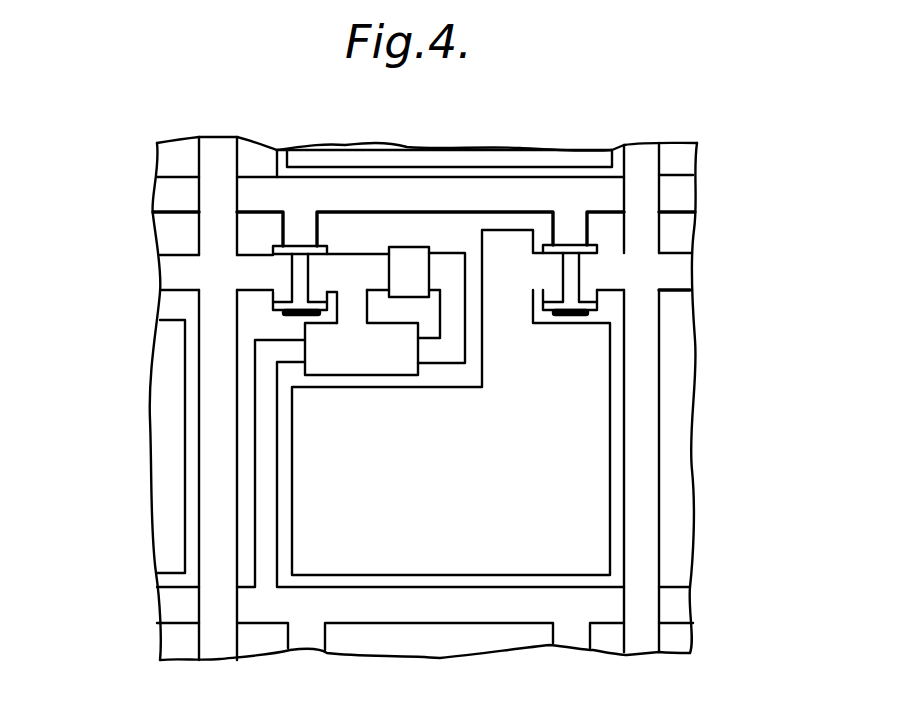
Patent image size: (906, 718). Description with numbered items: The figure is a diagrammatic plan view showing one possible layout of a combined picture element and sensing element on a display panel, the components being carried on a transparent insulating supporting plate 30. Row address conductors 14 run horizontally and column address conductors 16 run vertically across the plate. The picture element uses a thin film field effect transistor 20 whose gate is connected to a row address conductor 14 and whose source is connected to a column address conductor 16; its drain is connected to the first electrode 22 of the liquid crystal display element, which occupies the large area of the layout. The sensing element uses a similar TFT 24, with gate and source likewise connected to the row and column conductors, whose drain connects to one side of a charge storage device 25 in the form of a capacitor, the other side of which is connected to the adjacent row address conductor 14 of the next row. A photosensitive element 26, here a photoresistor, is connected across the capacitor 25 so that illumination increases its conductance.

The row address conductor 14 is at (180, 203).
The column address conductor 16 is at (208, 153).
The thin film field effect transistor 20 is at (602, 302).
The first electrode 22 is at (517, 557).
The TFT 24 is at (245, 302).
The charge storage device 25 is at (305, 323).
The photosensitive element 26 is at (418, 258).
The supporting plate 30 is at (683, 461).